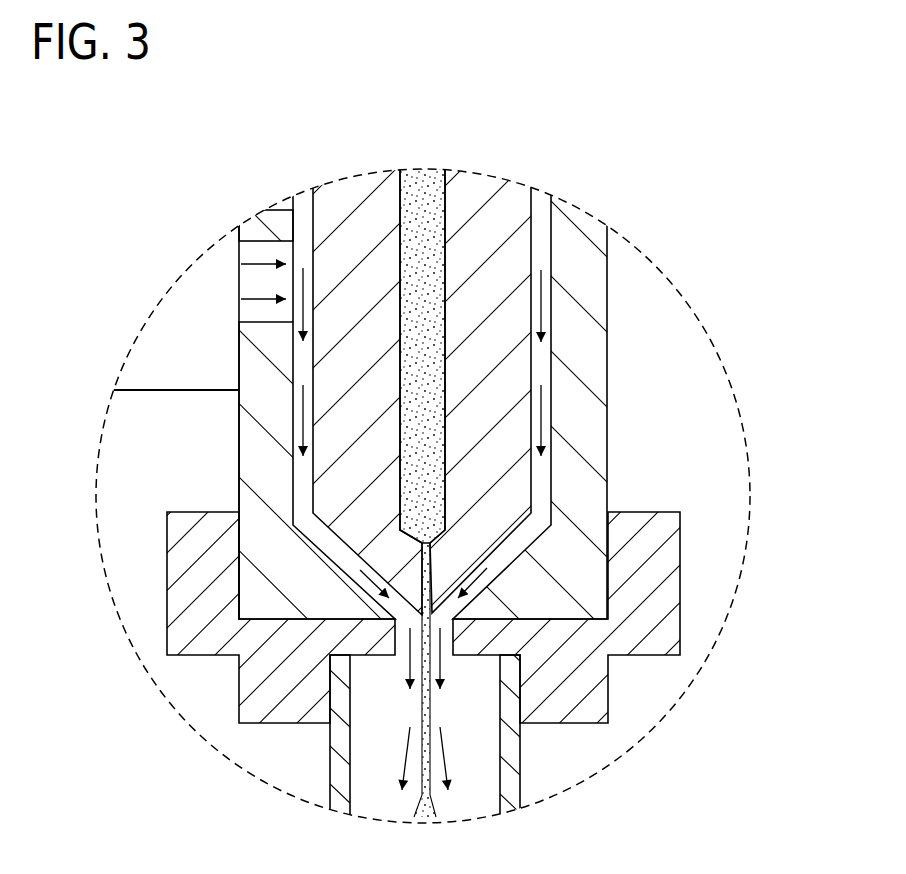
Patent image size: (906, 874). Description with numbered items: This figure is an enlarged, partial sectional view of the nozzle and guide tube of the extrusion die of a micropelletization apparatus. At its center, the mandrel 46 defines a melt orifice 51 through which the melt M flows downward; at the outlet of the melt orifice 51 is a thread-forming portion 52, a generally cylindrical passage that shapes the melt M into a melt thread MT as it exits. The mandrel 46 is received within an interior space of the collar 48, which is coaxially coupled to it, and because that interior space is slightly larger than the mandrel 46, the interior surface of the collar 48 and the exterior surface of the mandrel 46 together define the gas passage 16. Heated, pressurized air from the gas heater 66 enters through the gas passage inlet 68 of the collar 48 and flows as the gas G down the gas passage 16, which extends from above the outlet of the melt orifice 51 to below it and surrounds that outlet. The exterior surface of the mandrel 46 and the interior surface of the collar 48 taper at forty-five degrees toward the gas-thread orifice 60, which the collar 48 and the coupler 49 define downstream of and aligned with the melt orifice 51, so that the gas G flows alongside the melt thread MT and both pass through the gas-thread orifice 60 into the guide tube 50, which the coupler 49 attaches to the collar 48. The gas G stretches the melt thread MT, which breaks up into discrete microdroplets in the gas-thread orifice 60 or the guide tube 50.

The gas passage 16 is at (333, 542).
The mandrel 46 is at (348, 470).
The collar 48 is at (580, 350).
The coupler 49 is at (645, 642).
The guide tube 50 is at (340, 772).
The melt orifice 51 is at (440, 338).
The thread-forming portion 52 is at (413, 580).
The gas-thread orifice 60 is at (393, 634).
The gas heater 66 is at (193, 300).
The gas passage inlet 68 is at (280, 240).
The melt M is at (427, 255).
The melt thread MT is at (430, 698).
The flowing gas G is at (307, 398).